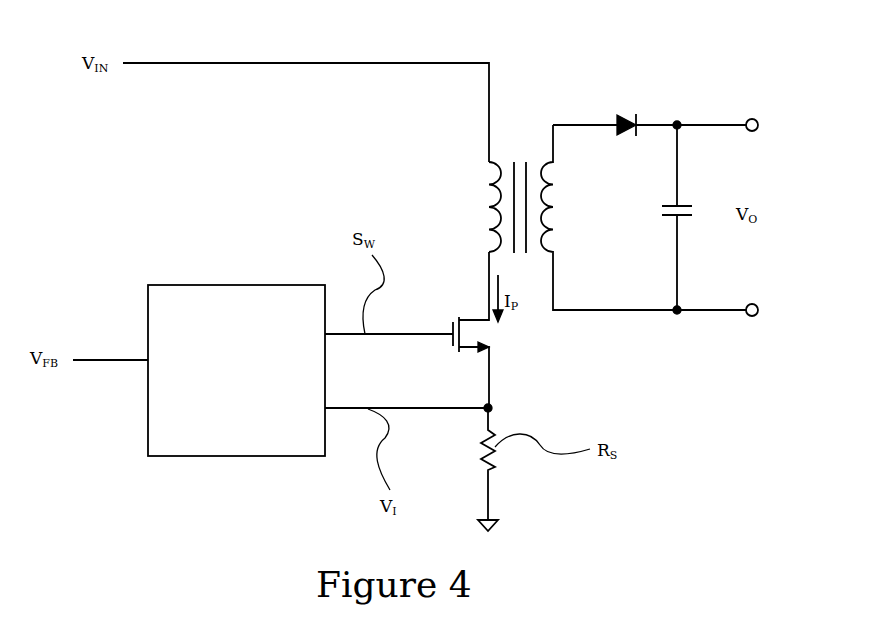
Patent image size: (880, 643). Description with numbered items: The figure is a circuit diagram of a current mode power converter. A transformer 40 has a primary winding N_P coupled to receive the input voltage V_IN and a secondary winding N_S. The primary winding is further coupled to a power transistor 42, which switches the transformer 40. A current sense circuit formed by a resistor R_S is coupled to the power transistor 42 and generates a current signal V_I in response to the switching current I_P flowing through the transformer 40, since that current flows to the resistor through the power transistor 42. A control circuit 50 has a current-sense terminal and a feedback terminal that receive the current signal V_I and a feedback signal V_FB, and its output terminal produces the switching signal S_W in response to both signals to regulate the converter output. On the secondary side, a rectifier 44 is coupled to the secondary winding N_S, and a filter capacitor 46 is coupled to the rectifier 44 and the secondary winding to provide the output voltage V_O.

The transformer 40 is at (518, 160).
The power transistor 42 is at (455, 325).
The rectifier 44 is at (627, 117).
The filter capacitor 46 is at (665, 217).
The control circuit 50 is at (205, 285).